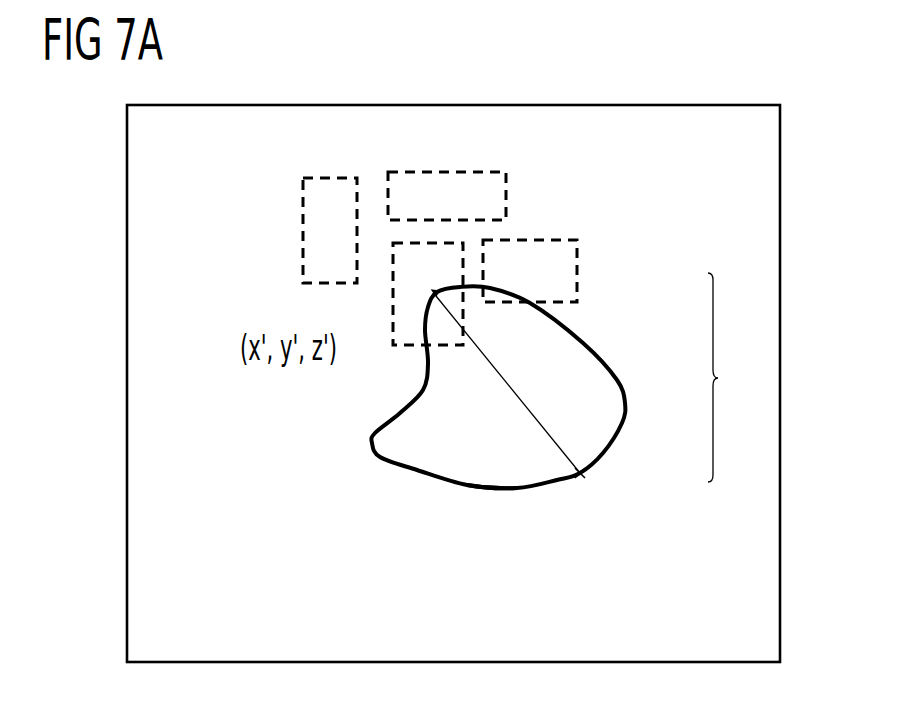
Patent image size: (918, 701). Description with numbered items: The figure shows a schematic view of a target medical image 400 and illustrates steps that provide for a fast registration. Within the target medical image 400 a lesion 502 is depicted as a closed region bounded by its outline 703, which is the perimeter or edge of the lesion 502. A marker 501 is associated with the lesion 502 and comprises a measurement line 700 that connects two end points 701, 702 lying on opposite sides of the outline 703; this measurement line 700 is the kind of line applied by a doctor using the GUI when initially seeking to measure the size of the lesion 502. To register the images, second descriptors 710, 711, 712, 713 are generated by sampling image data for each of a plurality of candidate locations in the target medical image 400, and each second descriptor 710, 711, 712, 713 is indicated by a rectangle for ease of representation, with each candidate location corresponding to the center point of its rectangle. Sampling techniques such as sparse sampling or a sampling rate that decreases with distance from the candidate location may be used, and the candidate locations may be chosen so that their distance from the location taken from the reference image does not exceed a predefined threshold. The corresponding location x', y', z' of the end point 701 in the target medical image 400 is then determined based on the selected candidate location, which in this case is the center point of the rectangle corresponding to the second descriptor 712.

The target medical image 400 is at (127, 382).
The marker 501 is at (737, 377).
The lesion 502 is at (394, 465).
The measurement line 700 is at (545, 380).
The end point 701 is at (433, 294).
The end point 702 is at (583, 477).
The outline 703 is at (484, 489).
The second descriptor 710 is at (303, 240).
The second descriptor 711 is at (506, 199).
The second descriptor 712 is at (393, 277).
The second descriptor 713 is at (577, 270).